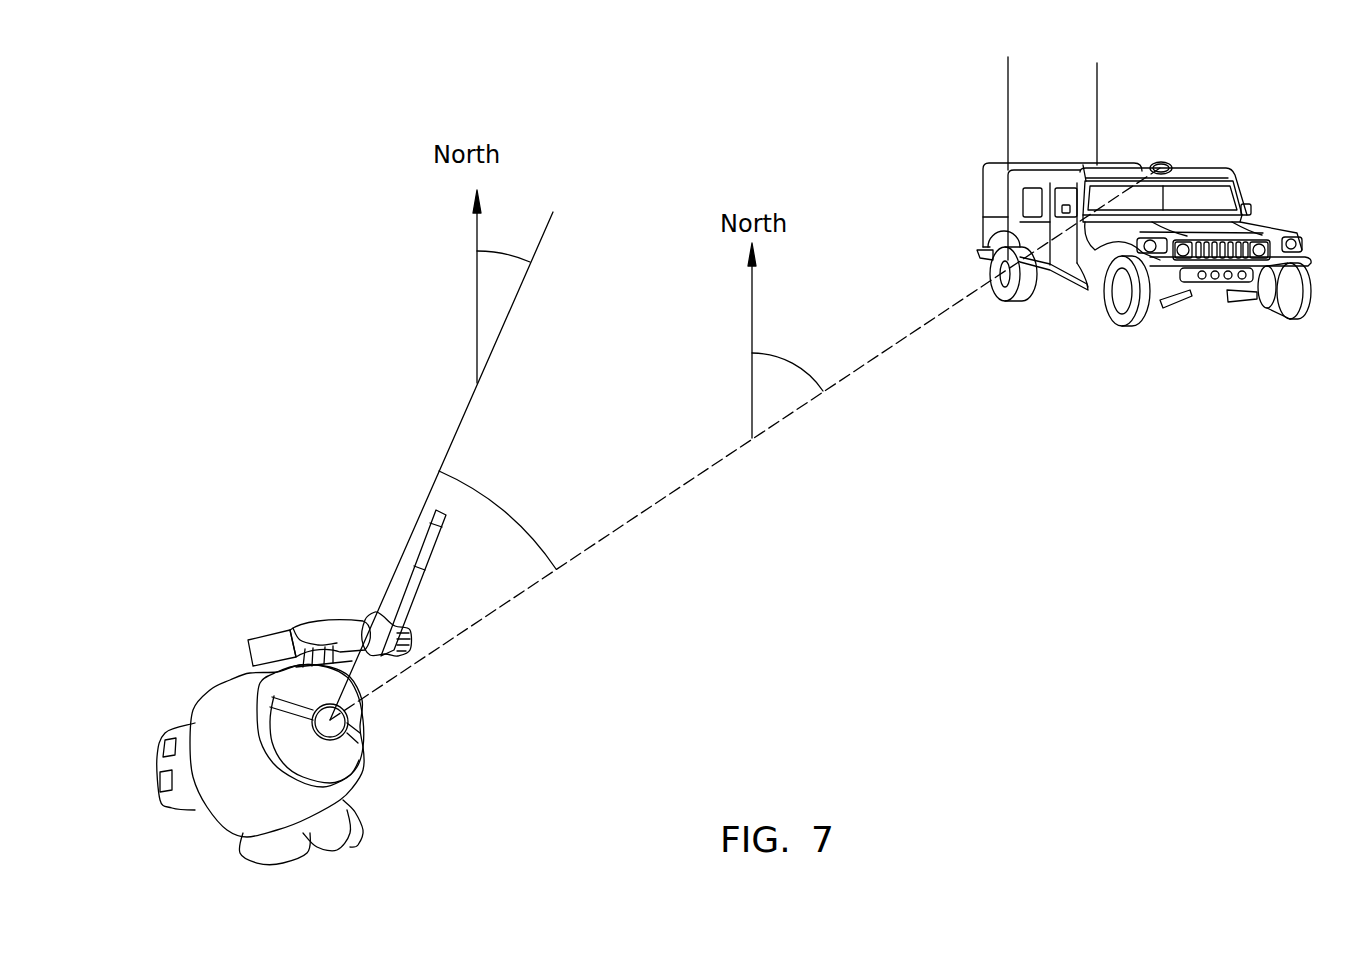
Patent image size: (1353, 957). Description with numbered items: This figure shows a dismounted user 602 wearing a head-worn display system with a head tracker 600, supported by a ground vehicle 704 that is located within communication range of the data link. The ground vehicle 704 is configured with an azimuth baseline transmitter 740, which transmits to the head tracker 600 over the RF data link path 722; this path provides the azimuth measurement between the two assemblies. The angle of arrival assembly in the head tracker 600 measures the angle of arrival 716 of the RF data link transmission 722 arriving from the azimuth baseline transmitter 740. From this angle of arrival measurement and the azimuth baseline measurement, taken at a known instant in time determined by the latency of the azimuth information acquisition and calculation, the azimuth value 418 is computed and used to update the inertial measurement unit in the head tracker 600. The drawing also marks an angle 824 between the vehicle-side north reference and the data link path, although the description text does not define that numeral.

The azimuth value 418 is at (507, 253).
The head tracker 600 is at (346, 724).
The user 602 is at (263, 633).
The ground vehicle 704 is at (987, 158).
The angle of arrival 716 is at (500, 502).
The RF data link path 722 is at (930, 317).
The azimuth baseline transmitter 740 is at (1167, 160).
The bearing angle to vehicle relative to north 824 is at (788, 355).